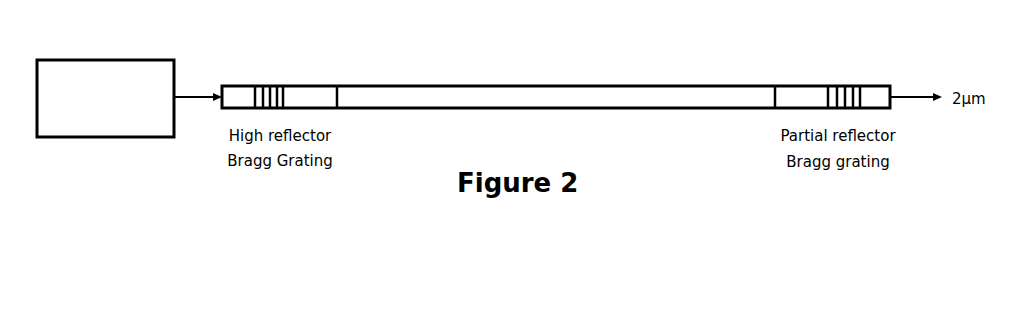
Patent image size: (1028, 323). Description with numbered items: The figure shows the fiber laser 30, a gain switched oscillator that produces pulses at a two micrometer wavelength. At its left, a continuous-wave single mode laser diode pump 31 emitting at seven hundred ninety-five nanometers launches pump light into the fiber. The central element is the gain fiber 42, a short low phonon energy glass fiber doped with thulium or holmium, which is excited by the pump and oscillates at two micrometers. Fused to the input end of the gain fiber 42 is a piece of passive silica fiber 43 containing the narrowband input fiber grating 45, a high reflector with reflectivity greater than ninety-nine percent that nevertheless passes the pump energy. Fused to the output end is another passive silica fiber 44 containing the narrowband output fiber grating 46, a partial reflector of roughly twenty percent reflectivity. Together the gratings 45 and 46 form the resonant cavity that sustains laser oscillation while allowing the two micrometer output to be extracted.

The fiber laser oscillator 30 is at (556, 66).
The laser diode pump 31 is at (80, 48).
The gain fiber 42 is at (453, 74).
The passive silica fiber 43 is at (329, 74).
The passive silica fiber 44 is at (794, 72).
The input fiber grating 45 is at (266, 74).
The output fiber grating 46 is at (846, 73).